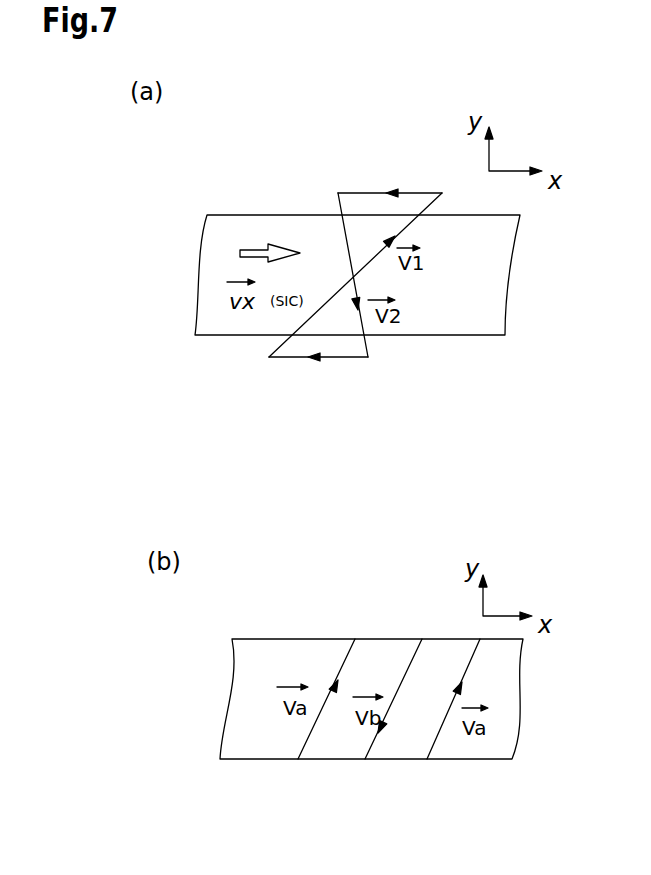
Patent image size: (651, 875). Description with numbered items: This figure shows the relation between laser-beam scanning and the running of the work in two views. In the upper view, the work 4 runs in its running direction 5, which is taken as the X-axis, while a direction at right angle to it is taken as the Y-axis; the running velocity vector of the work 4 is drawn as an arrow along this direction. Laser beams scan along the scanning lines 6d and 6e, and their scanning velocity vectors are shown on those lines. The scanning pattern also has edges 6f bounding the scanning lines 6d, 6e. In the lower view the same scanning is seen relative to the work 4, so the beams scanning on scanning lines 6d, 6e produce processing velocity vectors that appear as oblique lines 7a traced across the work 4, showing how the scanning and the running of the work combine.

The work 4 is at (488, 297).
The running direction of the work 5 is at (252, 248).
The scanning line 6d is at (413, 220).
The scanning line 6e is at (345, 235).
The pattern horizontal edge 6f is at (365, 193).
The oblique groove lines 7a is at (476, 655).